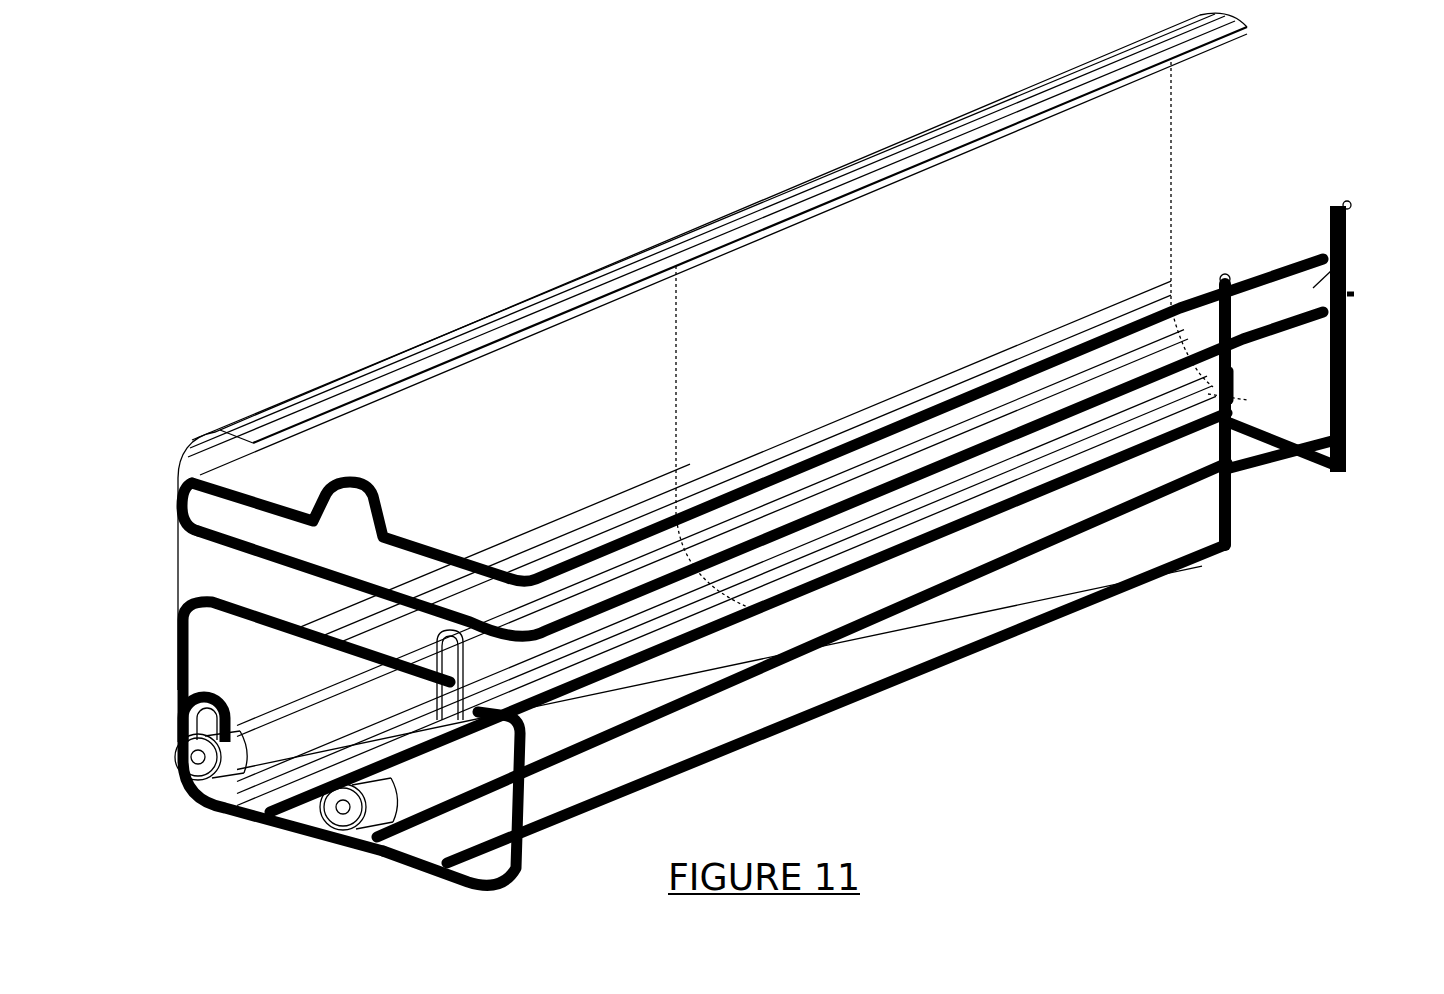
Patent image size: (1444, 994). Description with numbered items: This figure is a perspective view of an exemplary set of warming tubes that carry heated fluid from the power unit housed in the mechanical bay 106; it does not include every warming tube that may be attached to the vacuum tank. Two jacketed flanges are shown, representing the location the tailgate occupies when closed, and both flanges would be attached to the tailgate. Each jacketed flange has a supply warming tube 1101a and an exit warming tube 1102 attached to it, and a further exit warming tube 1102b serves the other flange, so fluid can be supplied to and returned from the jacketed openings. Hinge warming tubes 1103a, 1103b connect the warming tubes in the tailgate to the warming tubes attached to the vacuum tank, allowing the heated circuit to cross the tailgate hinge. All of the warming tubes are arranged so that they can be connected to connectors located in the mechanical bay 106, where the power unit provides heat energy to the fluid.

The mechanical bay 106 is at (1347, 247).
The supply warming tube 1101a is at (180, 690).
The exit warming tube 1102 is at (178, 630).
The exit warming tube 1102b is at (309, 854).
The hinge warming tube 1103a is at (467, 713).
The hinge warming tube 1103b is at (470, 678).